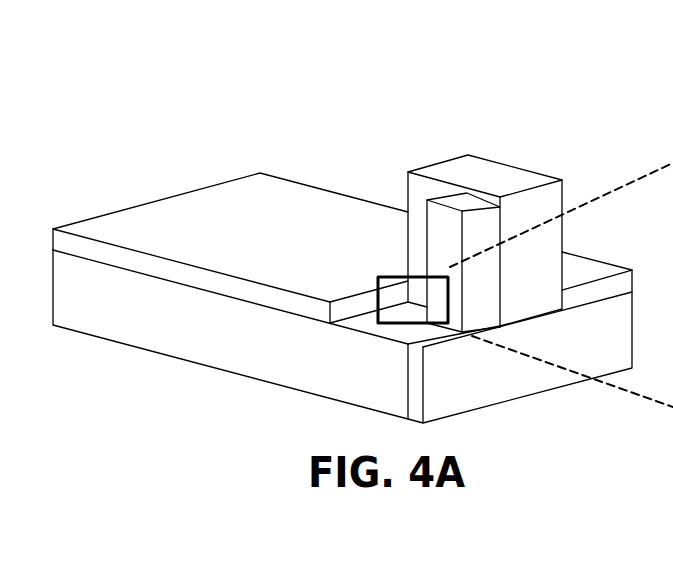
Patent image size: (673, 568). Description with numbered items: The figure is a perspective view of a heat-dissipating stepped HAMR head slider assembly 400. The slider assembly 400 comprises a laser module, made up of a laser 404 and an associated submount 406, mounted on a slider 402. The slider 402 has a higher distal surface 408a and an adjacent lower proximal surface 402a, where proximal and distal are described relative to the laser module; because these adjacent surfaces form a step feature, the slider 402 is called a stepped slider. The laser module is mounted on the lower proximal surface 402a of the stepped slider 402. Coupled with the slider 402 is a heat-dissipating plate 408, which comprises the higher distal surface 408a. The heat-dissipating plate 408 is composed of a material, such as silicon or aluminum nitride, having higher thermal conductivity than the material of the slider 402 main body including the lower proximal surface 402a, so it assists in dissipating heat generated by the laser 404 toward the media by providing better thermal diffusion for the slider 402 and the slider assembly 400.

The HAMR head slider assembly 400 is at (226, 94).
The slider 402 is at (163, 323).
The lower proximal surface 402a is at (377, 322).
The laser 404 is at (440, 222).
The submount 406 is at (490, 177).
The heat-dissipating plate 408 is at (115, 227).
The higher distal surface 408a is at (290, 242).